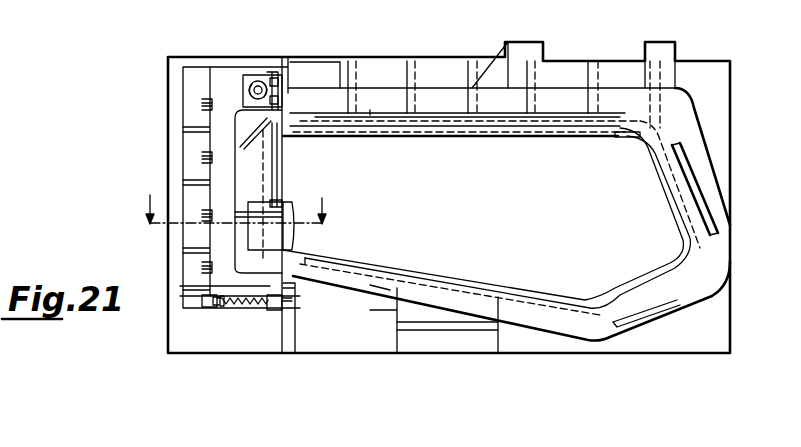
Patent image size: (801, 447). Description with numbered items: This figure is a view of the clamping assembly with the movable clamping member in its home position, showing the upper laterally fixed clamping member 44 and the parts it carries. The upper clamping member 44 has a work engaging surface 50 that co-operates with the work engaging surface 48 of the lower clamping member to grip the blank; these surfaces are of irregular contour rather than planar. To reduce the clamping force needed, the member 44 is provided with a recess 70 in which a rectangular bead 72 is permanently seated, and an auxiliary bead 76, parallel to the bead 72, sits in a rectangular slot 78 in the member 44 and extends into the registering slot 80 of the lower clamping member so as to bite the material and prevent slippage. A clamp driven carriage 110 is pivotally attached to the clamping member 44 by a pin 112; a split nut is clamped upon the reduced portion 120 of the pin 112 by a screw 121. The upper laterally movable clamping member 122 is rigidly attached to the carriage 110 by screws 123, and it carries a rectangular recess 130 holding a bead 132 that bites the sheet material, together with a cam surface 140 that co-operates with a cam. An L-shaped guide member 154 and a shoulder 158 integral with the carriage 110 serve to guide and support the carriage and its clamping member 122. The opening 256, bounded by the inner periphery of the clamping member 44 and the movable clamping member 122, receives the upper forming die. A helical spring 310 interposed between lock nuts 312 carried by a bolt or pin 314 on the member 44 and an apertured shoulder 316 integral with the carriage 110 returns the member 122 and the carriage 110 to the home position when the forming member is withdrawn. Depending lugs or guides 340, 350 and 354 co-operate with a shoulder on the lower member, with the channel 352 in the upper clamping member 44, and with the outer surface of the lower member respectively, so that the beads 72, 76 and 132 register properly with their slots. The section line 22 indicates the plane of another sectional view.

The section line 22- 22 is at (233, 209).
The upper laterally fixed clamping member 44 is at (705, 70).
The work engaging surface 48 is at (680, 236).
The work engaging surface 50 is at (668, 133).
The recess 70 is at (372, 112).
The rectangular bead 72 is at (323, 113).
The auxiliary bead 76 is at (535, 316).
The rectangular slot 78 is at (425, 300).
The slot 80 is at (557, 88).
The clamp driven carriage 110 is at (222, 70).
The pin 112 is at (258, 88).
The reduced portion 120 is at (245, 90).
The screw 121 is at (275, 72).
The upper laterally movable clamping member 122 is at (272, 172).
The screws 123 is at (200, 160).
The rectangular recess 130 is at (375, 140).
The bead 132 is at (290, 140).
The cam surface 140 is at (290, 234).
The L-shaped guide member 154 is at (208, 307).
The shoulder 158 is at (190, 300).
The opening 256 is at (474, 173).
The helical spring 310 is at (250, 306).
The lock nuts 312 is at (224, 306).
The bolt or pin 314 is at (215, 305).
The apertured shoulder 316 is at (278, 310).
The depending lug or guide 340 is at (465, 342).
The depending lug or guide 350 is at (522, 50).
The channel 352 is at (625, 65).
The depending lug or guide 354 is at (665, 55).